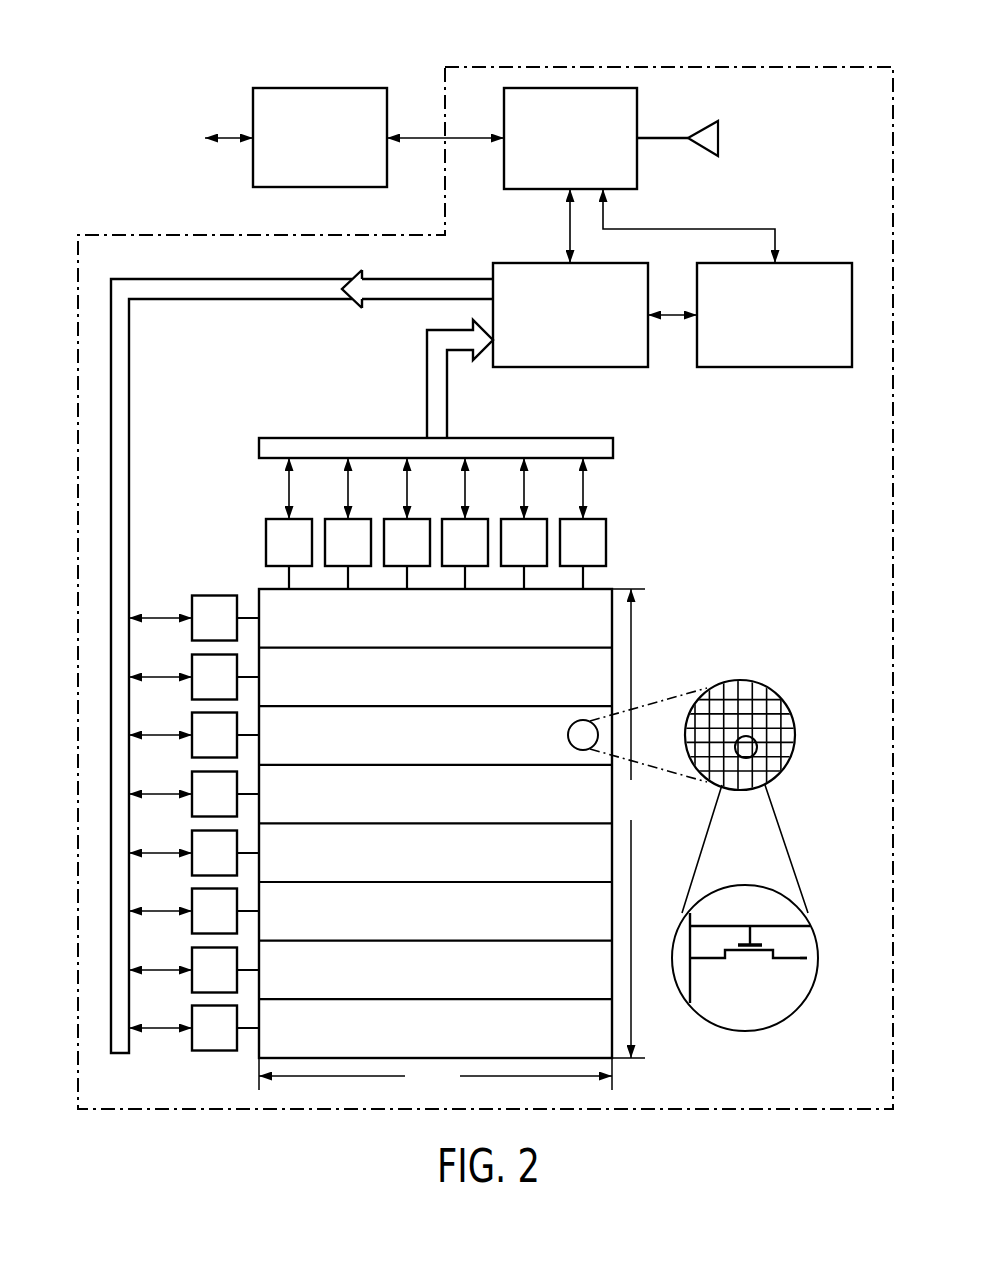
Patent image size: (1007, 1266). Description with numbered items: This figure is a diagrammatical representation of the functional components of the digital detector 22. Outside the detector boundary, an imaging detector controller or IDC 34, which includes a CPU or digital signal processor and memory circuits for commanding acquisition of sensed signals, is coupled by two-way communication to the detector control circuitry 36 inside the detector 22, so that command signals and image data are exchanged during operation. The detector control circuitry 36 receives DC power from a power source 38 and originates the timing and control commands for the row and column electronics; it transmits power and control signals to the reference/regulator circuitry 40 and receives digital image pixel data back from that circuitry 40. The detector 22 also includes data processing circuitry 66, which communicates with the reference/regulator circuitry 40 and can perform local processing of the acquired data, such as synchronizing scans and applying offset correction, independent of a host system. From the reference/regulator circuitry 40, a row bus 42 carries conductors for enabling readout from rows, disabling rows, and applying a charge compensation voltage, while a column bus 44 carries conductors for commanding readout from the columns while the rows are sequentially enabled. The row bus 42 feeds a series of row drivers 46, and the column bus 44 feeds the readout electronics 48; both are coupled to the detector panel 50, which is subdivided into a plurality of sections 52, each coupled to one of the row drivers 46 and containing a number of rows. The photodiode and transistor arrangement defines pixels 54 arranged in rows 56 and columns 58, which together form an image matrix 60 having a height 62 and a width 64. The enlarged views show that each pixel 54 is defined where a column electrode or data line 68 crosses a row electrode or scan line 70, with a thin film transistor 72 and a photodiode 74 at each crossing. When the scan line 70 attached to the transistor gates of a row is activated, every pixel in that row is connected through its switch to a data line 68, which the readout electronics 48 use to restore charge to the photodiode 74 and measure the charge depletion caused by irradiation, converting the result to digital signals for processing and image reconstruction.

The digital detector 22 is at (513, 66).
The imaging detector controller (IDC) 34 is at (297, 88).
The detector control circuitry 36 is at (637, 165).
The power source 38 is at (720, 132).
The reference/regulator circuitry 40 is at (535, 263).
The row bus 42 is at (152, 354).
The column bus 44 is at (300, 438).
The row drivers 46 is at (192, 661).
The readout electronics 48 is at (478, 519).
The detector panel 50 is at (616, 632).
The sections 52 is at (450, 635).
The pixels 54 is at (772, 706).
The rows 56 is at (797, 750).
The columns 58 is at (753, 792).
The image matrix 60 is at (707, 789).
The height 62 is at (629, 823).
The width 64 is at (435, 1076).
The data processing circuitry 66 is at (775, 367).
The column electrode (data line) 68 is at (690, 985).
The row electrode (scan line) 70 is at (757, 926).
The thin film transistor 72 is at (749, 929).
The photodiode 74 is at (805, 965).